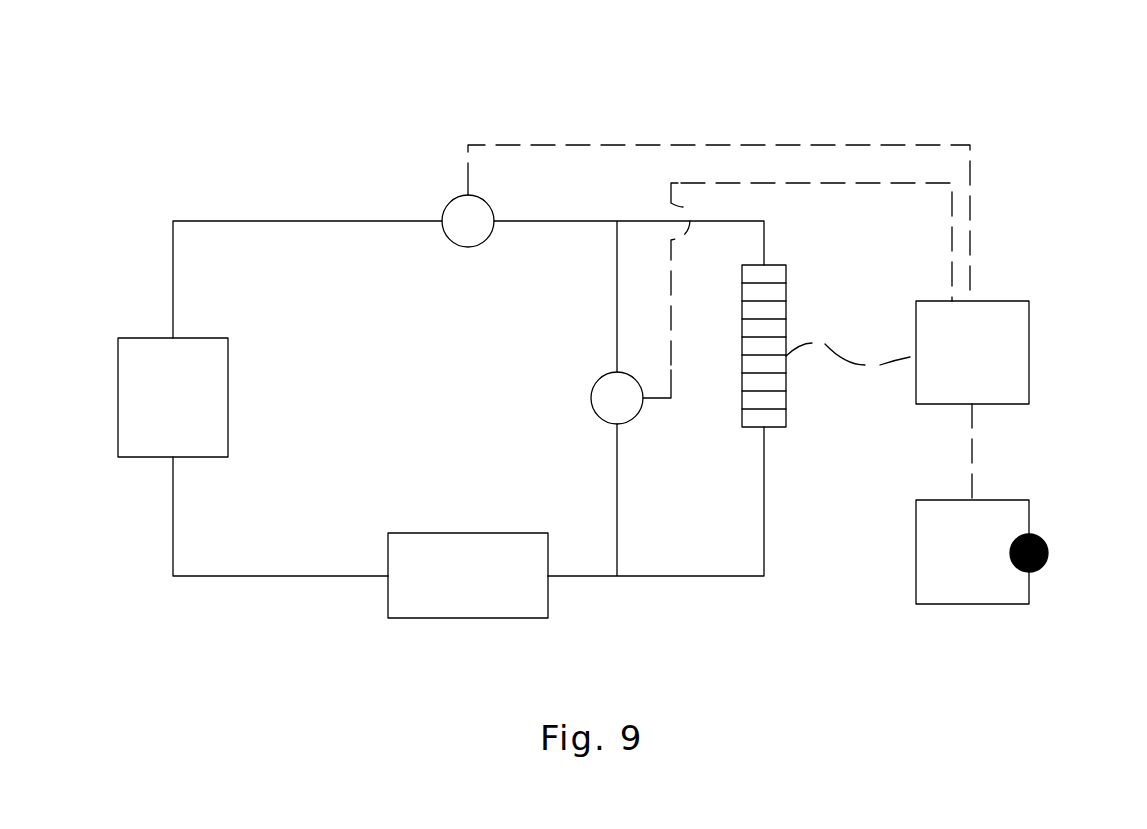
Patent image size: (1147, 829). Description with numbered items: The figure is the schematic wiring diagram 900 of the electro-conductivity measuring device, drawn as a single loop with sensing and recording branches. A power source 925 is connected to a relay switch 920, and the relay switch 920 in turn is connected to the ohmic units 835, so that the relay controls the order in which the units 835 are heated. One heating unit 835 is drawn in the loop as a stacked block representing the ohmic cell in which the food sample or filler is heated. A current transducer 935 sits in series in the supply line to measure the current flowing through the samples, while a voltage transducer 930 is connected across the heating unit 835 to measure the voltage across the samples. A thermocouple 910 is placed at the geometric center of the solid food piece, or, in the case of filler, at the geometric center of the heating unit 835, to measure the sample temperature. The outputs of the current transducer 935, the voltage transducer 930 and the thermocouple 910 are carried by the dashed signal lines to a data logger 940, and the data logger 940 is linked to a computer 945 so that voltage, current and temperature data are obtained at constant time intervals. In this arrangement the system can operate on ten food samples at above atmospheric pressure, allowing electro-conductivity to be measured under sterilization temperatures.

The schematic wiring diagram 900 is at (1064, 131).
The power source 925 is at (150, 337).
The relay switch 920 is at (443, 619).
The current transducer 935 is at (456, 197).
The voltage transducer 930 is at (598, 379).
The ohmic heating unit 835 is at (742, 378).
The thermocouple 910 is at (838, 355).
The data logger 940 is at (1030, 355).
The computer 945 is at (945, 605).